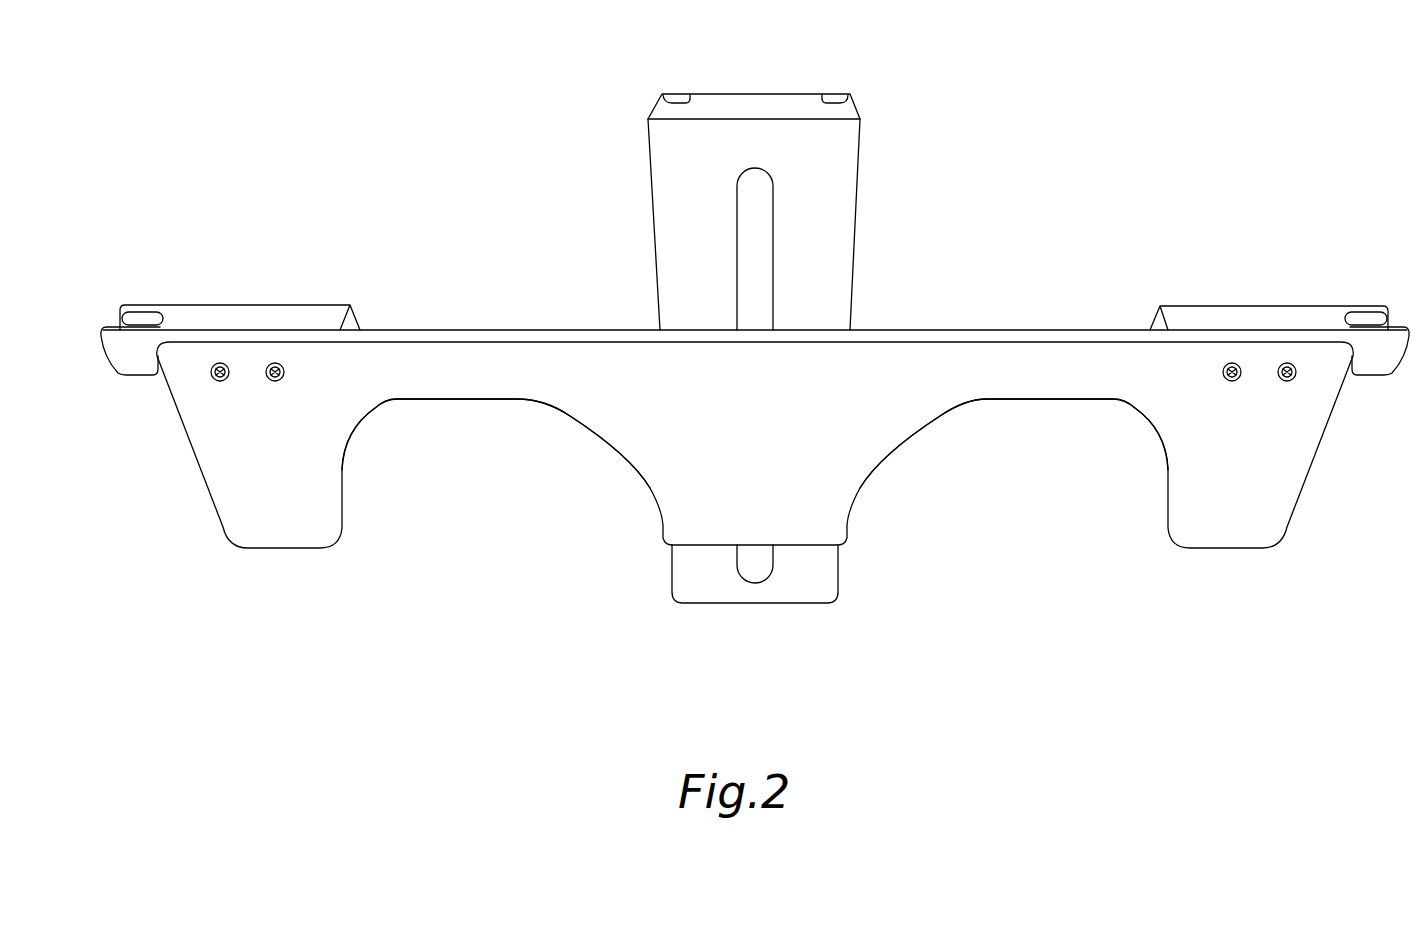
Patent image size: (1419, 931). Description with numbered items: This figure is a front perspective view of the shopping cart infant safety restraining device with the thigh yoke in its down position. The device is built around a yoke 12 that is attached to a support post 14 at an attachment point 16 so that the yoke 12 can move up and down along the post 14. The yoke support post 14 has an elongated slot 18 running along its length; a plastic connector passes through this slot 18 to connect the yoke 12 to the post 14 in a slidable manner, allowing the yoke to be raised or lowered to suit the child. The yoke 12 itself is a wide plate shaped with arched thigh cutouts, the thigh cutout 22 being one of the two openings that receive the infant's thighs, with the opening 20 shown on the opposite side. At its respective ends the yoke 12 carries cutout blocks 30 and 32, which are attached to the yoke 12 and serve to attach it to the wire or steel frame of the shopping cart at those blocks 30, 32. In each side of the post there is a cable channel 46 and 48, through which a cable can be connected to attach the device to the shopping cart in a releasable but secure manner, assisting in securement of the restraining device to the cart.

The yoke 12 is at (1292, 435).
The post 14 is at (825, 573).
The attachment point 16 is at (858, 330).
The elongated slot 18 is at (757, 238).
The left arched opening 20 is at (487, 440).
The thigh cutout 22 is at (1013, 457).
The cutout block 30 is at (228, 305).
The cutout block 32 is at (1268, 305).
The cable channel 46 is at (683, 92).
The cable channel 48 is at (810, 92).